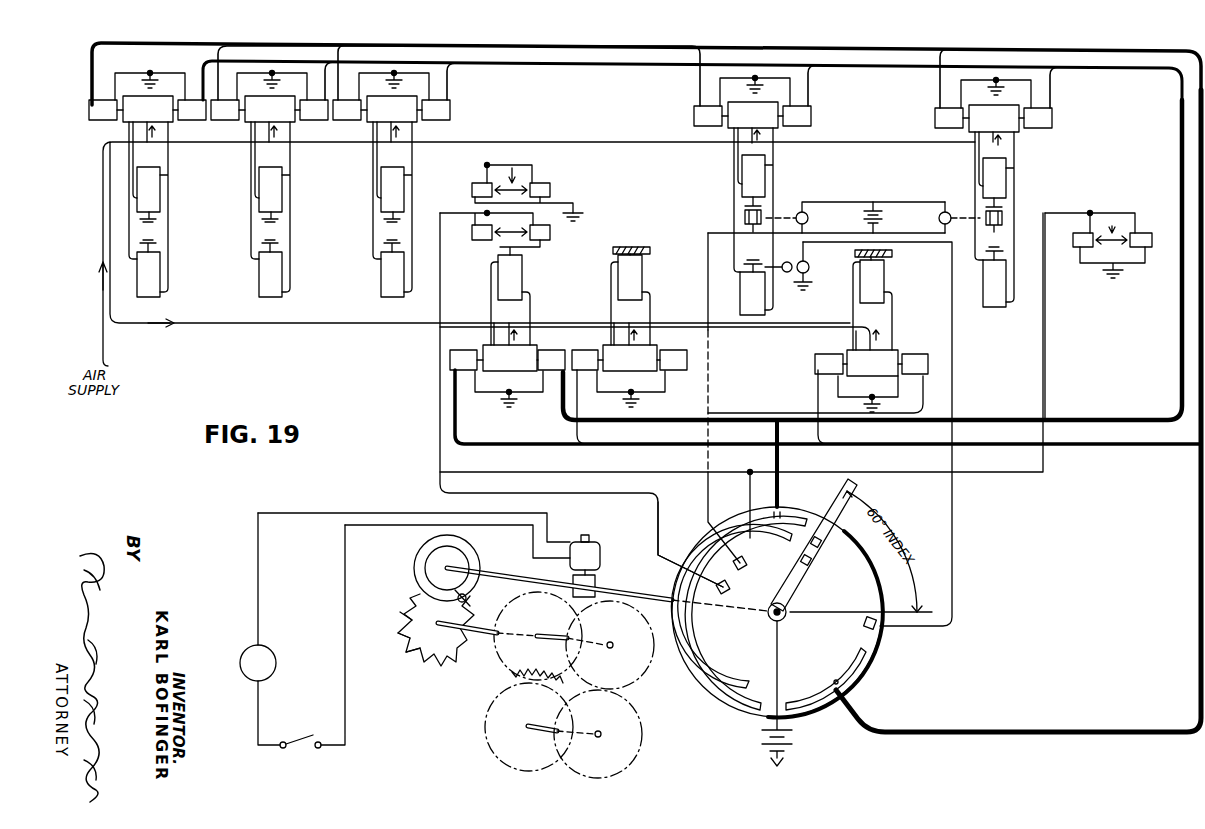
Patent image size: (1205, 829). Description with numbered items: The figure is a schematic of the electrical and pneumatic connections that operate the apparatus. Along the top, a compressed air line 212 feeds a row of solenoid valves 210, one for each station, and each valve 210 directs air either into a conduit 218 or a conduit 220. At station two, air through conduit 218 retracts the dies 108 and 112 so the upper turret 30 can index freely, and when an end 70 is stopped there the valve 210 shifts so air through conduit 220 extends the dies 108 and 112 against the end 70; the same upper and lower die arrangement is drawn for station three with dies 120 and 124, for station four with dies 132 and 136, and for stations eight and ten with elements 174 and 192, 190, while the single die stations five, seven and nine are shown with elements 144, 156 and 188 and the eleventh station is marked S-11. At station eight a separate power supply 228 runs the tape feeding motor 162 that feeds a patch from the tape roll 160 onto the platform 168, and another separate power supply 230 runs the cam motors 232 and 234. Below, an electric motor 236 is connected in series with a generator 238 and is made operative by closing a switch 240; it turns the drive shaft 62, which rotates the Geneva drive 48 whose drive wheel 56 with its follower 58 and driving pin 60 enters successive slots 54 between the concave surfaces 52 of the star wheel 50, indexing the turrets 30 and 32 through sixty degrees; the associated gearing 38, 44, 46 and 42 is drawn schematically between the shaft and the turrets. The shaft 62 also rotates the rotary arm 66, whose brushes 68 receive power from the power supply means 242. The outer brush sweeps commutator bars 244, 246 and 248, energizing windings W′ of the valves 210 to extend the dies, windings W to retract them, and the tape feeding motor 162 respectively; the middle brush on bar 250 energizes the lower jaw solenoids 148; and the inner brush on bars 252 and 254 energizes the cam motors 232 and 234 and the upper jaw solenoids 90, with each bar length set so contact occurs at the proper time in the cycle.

The valve 210 is at (570, 242).
The line 212 is at (206, 142).
The conduit 218 is at (129, 186).
The conduit 220 is at (168, 186).
The die 108 is at (154, 222).
The die 112 is at (156, 242).
The cylinder C3 valve 120 is at (276, 222).
The cylinder C3 valve 124 is at (262, 244).
The cylinder C4 valve 132 is at (386, 220).
The cylinder C4 valve 136 is at (384, 243).
The upper jaw solenoids 90 is at (472, 188).
The end 70 is at (512, 168).
The lower jaw solenoids 148 is at (472, 240).
The cylinder C5 valve 144 is at (524, 247).
The cylinder C7 switch 156 is at (630, 247).
The cylinder C8 valve 174 is at (745, 222).
The platform 168 is at (744, 265).
The tape roll 160 is at (783, 264).
The tape feeding motor 162 is at (808, 290).
The power supply 228 is at (810, 254).
The motor 232 is at (798, 212).
The motor 234 is at (944, 212).
The power supply 230 is at (882, 215).
The cylinder C9 switch 188 is at (892, 256).
The cylinder C10 valve 192 is at (1004, 228).
The cylinder C10 valve 190 is at (1001, 250).
The switch S-11 is at (1086, 298).
The electric motor 236 is at (600, 546).
The drive shaft 62 is at (648, 590).
The drive wheel 56 is at (416, 555).
The follower 58 is at (426, 572).
The Geneva drive 48 is at (398, 597).
The driving pin 60 is at (468, 598).
The slots 54 is at (402, 620).
The concave surfaces 52 is at (404, 640).
The star wheel 50 is at (416, 660).
The gear shaft 38 is at (486, 640).
The turret 30 is at (645, 674).
The gear 46 is at (486, 718).
The shaft 42 is at (542, 740).
The turret 32 is at (644, 740).
The gear teeth 44 is at (512, 674).
The segmental commutator bar 250 is at (715, 663).
The segmental commutator bar 246 is at (866, 680).
The rotary arm 66 is at (830, 518).
The brushes 68 is at (822, 548).
The segmental commutator bar 252 is at (745, 562).
The segmental commutator bar 254 is at (729, 587).
The segmental commutator bar 248 is at (875, 628).
The segmental commutator bar 244 is at (710, 550).
The power supply means 242 is at (790, 744).
The generator 238 is at (250, 678).
The switch 240 is at (306, 738).